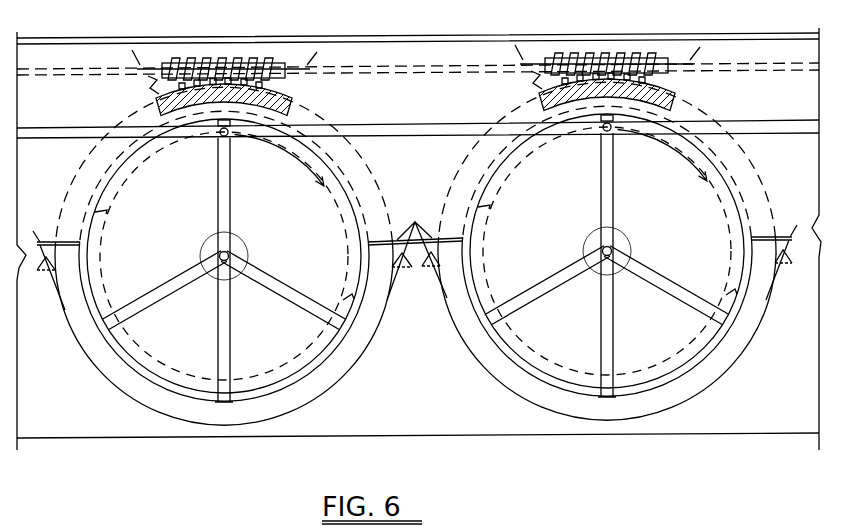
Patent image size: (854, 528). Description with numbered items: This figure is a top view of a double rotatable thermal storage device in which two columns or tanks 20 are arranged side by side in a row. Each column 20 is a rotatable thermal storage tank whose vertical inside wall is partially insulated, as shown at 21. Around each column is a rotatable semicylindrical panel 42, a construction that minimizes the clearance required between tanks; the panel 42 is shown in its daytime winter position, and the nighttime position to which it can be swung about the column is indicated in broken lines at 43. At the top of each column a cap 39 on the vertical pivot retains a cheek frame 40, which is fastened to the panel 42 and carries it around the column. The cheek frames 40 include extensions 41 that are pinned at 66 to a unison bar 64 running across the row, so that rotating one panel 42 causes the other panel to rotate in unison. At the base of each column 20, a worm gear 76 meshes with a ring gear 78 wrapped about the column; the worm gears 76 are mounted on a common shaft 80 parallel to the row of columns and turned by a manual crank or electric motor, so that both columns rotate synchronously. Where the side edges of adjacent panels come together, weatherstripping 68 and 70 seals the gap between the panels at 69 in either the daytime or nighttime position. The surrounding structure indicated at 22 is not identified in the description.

The column or tank 20 is at (333, 248).
The insulation on vertical inside wall 21 is at (104, 246).
The frame top member 22 is at (494, 35).
The cap 39 is at (232, 247).
The cheek frame 40 is at (232, 337).
The extension 41 is at (218, 168).
The semicylindrical panel 42 is at (335, 383).
The nighttime position 43 is at (318, 110).
The unison bar 64 is at (405, 127).
The pin 66 is at (600, 131).
The weatherstripping 68 is at (48, 242).
The seal between panels 69 is at (415, 222).
The weatherstripping 70 is at (785, 233).
The worm gear 76 is at (233, 56).
The ring gear 78 is at (291, 93).
The shaft 80 is at (392, 67).